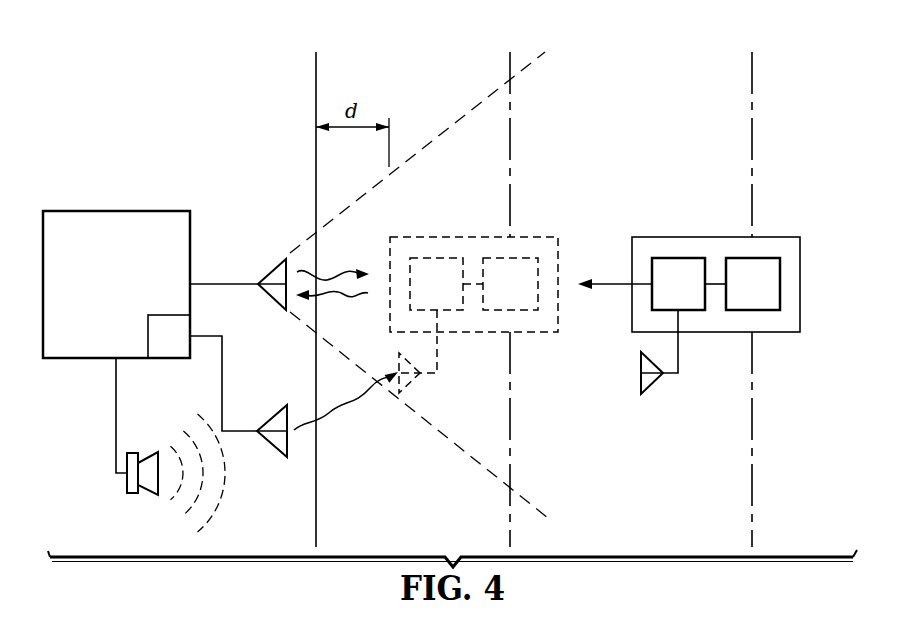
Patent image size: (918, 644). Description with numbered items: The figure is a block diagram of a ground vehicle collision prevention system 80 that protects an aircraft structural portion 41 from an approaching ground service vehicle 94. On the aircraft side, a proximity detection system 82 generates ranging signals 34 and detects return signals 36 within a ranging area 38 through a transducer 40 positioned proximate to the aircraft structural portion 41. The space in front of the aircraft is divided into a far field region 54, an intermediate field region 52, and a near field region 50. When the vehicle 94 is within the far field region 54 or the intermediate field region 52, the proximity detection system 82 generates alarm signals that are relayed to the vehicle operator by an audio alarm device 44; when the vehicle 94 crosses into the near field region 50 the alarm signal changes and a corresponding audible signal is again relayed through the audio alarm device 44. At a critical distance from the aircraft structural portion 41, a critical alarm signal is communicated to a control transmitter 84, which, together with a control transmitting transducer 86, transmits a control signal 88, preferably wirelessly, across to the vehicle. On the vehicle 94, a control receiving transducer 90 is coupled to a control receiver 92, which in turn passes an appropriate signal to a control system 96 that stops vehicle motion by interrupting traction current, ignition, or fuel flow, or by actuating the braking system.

The ground vehicle collision prevention system 80 is at (168, 59).
The aircraft structural portion 41 is at (316, 95).
The ranging area 38 is at (475, 106).
The near field region 50 is at (488, 164).
The intermediate field region 52 is at (644, 164).
The far field region 54 is at (824, 164).
The proximity detection system 82 is at (96, 211).
The control transmitter 84 is at (170, 315).
The transducer 40 is at (270, 272).
The control transmitting transducer 86 is at (270, 417).
The audio alarm device 44 is at (130, 494).
The ranging signals 34 is at (328, 278).
The return signals 36 is at (345, 297).
The control signal 88 is at (356, 401).
The ground service vehicle 94 is at (566, 305).
The control receiver 92 is at (447, 237).
The control system 96 is at (540, 272).
The control receiving transducer 90 is at (410, 385).